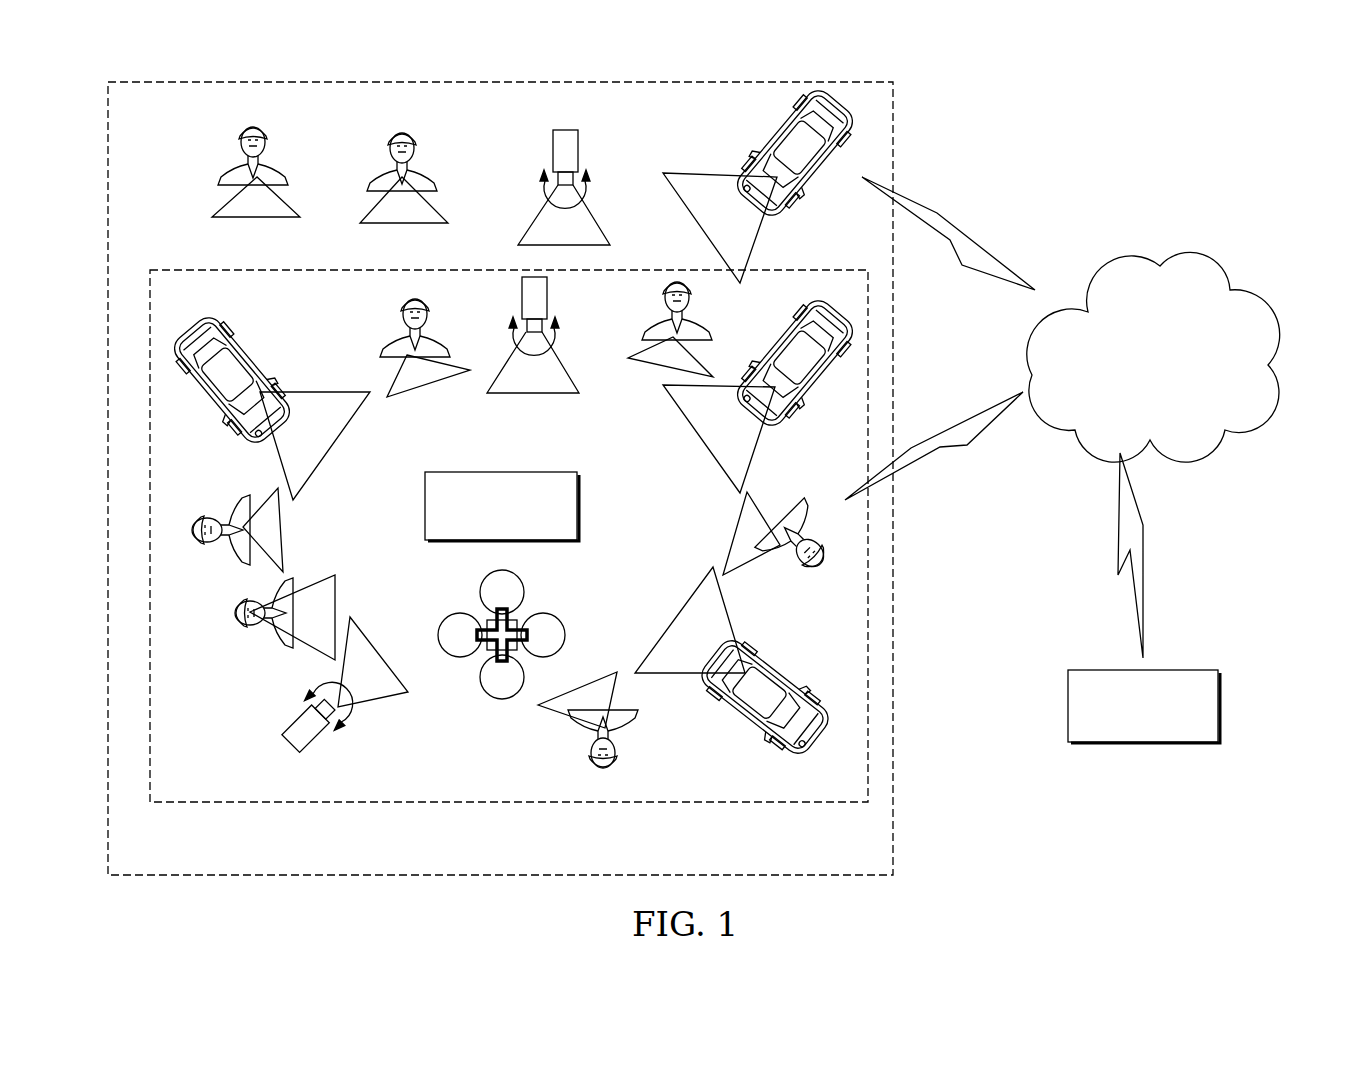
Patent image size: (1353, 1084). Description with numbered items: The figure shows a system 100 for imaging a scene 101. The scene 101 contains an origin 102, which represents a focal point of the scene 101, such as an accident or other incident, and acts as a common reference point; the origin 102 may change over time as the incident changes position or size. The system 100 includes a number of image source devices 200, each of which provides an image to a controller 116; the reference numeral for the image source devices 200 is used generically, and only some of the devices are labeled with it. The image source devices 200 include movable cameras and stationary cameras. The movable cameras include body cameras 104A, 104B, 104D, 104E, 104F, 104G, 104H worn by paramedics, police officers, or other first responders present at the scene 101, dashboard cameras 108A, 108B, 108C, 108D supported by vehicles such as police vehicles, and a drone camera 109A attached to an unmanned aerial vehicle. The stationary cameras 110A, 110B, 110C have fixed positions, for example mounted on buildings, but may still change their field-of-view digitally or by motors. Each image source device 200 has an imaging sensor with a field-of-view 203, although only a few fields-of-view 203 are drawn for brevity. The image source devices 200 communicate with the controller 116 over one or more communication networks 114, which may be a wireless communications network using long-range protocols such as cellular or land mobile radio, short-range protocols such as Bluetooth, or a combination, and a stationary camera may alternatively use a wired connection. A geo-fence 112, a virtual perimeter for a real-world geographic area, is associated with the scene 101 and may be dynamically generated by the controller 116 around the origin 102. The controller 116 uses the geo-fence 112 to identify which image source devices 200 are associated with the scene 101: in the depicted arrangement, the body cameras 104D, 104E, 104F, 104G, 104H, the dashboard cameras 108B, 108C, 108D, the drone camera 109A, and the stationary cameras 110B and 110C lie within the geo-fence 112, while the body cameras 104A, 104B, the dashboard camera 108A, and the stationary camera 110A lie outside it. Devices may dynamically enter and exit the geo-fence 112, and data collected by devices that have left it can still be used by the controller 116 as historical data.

The system 100 is at (905, 134).
The scene 101 is at (702, 851).
The origin 102 is at (425, 507).
The body camera 104A is at (235, 178).
The body camera 104B is at (372, 184).
The body camera 104D is at (660, 334).
The body camera 104E is at (782, 507).
The body camera 104F is at (628, 713).
The body camera 104G is at (277, 640).
The body camera 104H is at (243, 517).
The dashboard camera 108A is at (768, 138).
The dashboard camera 108B is at (218, 400).
The dashboard camera 108C is at (785, 328).
The dashboard camera 108D is at (780, 650).
The drone camera 109A is at (558, 614).
The stationary camera 110A is at (553, 156).
The stationary camera 110B is at (522, 300).
The stationary camera 110C is at (320, 733).
The geo-fence 112 is at (512, 782).
The communication networks 114 is at (1272, 358).
The controller 116 is at (1068, 708).
The image source device 200 is at (200, 440).
The field-of-view 203 is at (345, 430).